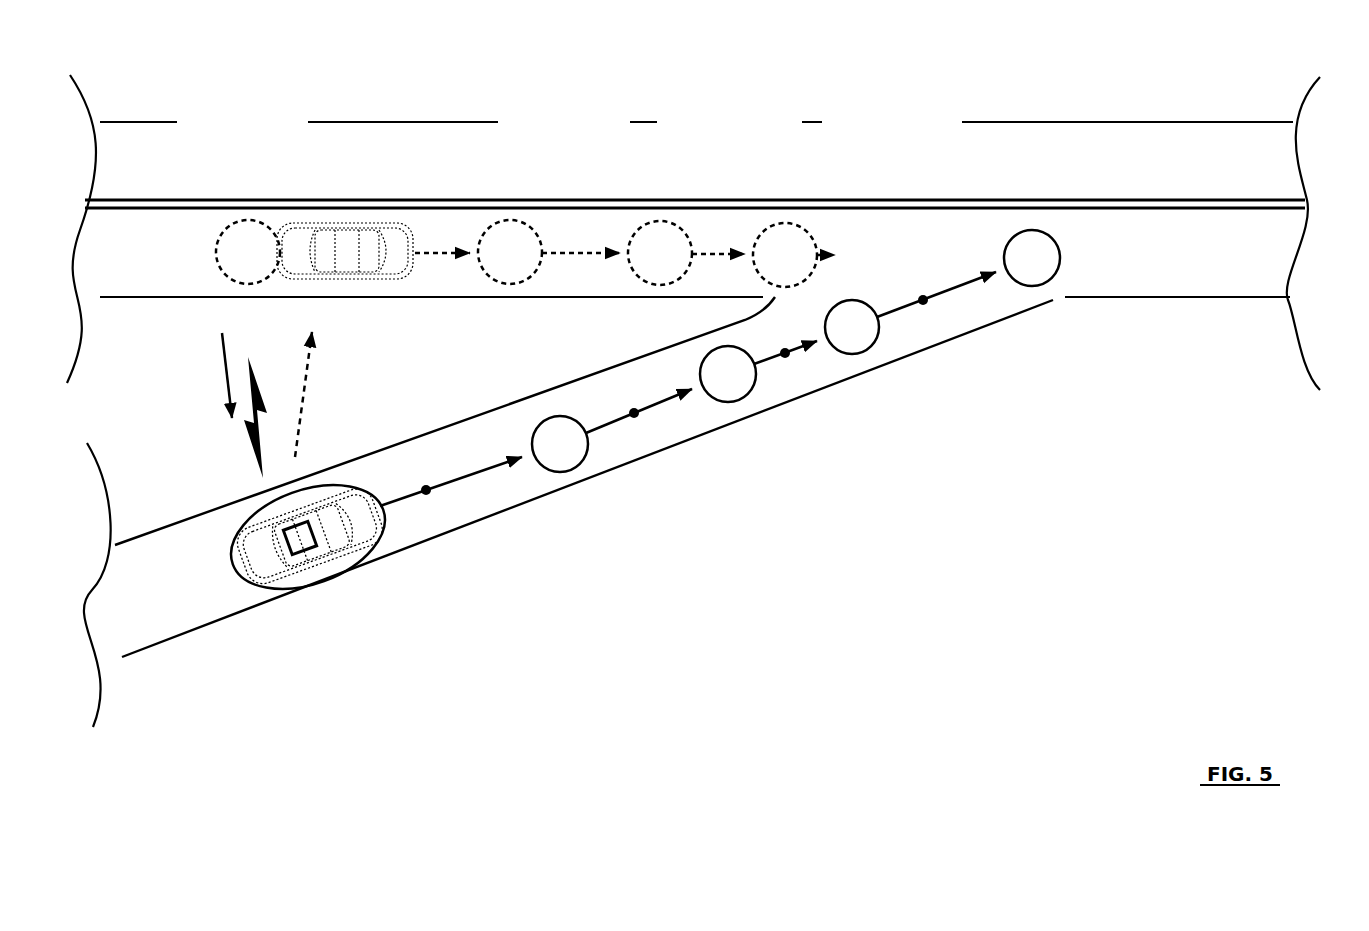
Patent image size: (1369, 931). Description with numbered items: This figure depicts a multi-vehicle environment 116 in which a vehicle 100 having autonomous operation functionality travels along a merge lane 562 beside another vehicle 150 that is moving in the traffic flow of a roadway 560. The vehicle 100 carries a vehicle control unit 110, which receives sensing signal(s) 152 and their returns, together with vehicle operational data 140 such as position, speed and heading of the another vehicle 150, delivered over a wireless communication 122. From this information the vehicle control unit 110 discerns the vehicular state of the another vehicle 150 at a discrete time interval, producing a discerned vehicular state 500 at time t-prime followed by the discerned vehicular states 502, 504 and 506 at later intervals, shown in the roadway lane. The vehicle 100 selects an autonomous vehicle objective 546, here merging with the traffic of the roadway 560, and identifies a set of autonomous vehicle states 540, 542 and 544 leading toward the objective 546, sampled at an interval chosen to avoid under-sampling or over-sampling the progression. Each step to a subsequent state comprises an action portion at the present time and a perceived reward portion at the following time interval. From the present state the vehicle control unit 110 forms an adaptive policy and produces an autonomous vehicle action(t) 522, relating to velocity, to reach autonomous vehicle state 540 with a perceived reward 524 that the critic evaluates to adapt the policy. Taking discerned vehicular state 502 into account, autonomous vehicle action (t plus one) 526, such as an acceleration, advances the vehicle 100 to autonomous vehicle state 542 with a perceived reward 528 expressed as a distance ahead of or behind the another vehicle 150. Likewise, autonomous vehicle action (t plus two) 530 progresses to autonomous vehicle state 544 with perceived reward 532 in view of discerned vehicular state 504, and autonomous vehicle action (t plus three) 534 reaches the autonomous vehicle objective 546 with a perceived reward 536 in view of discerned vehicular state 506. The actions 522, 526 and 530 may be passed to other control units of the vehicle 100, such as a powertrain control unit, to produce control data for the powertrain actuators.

The multi-vehicle environment 116 is at (695, 436).
The vehicle 100 is at (338, 567).
The vehicle control unit 110 is at (286, 549).
The wireless communication 122 is at (250, 441).
The vehicle operational data 140 is at (228, 398).
The another vehicle 150 is at (348, 218).
The sensing signal(s) 152 is at (307, 380).
The discerned vehicular state 500 is at (245, 217).
The discerned vehicular state 502 is at (540, 233).
The discerned vehicular state 504 is at (685, 235).
The discerned vehicular state 506 is at (810, 233).
The autonomous vehicle action(t) 522 is at (472, 548).
The perceived reward 524 is at (395, 440).
The autonomous vehicle action (t+1) 526 is at (696, 469).
The perceived reward (t+2) 528 is at (596, 369).
The autonomous vehicle action (t+2) 530 is at (838, 409).
The reward(t+3) 532 is at (730, 328).
The autonomous vehicle action (t+3) 534 is at (966, 335).
The perceived reward (t+4) 536 is at (934, 254).
The autonomous vehicle state 540 is at (577, 463).
The autonomous vehicle state 542 is at (750, 397).
The autonomous vehicle state 544 is at (883, 340).
The autonomous vehicle objective 546 is at (1045, 282).
The roadway 560 is at (1088, 68).
The merge lane 562 is at (263, 607).